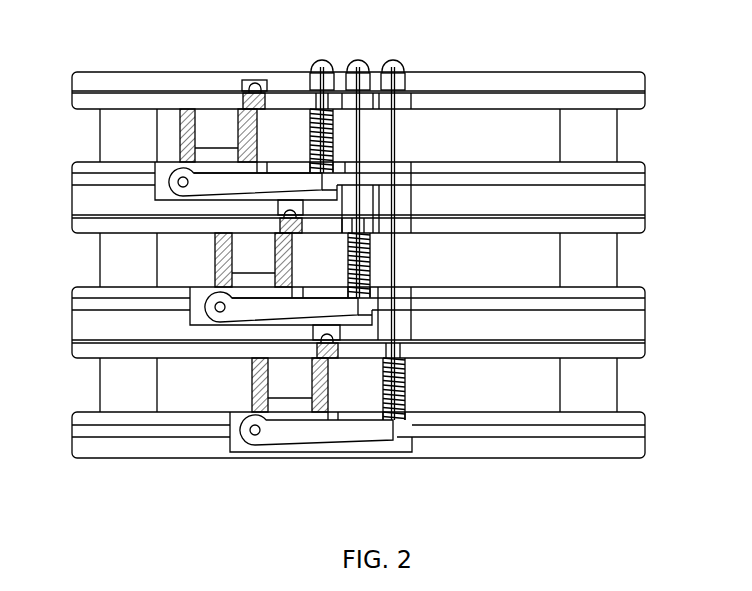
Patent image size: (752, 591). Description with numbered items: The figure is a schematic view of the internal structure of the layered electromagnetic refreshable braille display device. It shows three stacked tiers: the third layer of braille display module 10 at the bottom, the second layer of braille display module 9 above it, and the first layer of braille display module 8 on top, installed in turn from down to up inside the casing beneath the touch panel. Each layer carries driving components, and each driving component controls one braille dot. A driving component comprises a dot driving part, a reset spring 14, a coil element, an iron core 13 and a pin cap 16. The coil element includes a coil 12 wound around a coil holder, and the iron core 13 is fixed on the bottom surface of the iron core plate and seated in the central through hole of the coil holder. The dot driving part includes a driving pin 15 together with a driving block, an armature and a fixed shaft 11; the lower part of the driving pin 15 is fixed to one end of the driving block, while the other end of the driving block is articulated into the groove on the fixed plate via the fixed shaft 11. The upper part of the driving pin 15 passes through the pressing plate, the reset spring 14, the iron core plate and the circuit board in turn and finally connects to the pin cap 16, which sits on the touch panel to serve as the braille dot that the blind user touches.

The first layer of braille display module 8 is at (645, 90).
The second layer of braille display module 9 is at (72, 215).
The third layer of braille display module 10 is at (645, 341).
The fixed shaft 11 is at (255, 432).
The coil 12 is at (252, 402).
The iron core 13 is at (290, 382).
The reset spring 14 is at (405, 393).
The driving pin 15 is at (397, 157).
The pin cap 16 is at (400, 63).